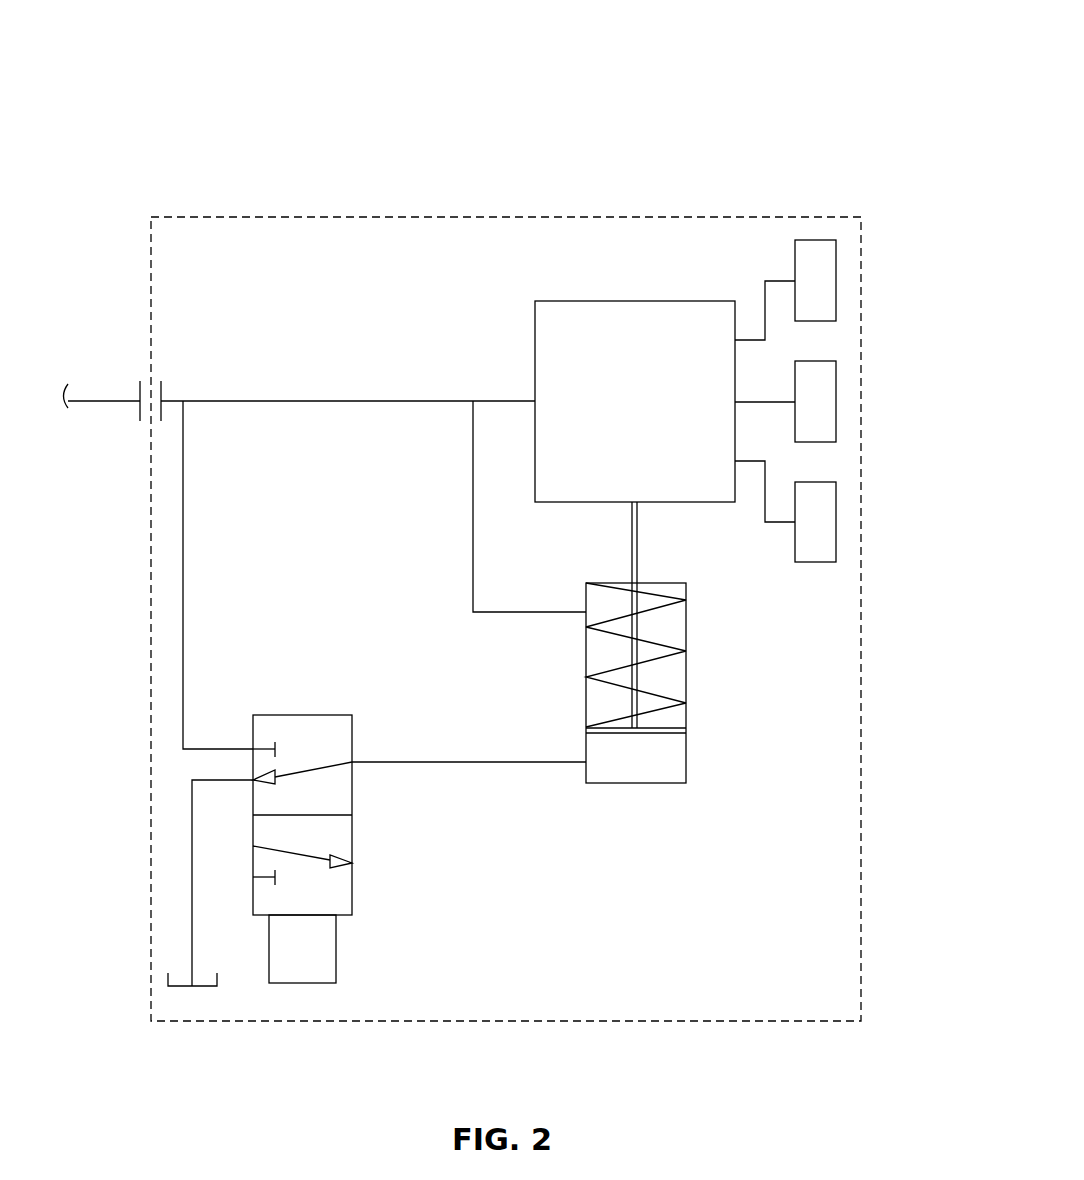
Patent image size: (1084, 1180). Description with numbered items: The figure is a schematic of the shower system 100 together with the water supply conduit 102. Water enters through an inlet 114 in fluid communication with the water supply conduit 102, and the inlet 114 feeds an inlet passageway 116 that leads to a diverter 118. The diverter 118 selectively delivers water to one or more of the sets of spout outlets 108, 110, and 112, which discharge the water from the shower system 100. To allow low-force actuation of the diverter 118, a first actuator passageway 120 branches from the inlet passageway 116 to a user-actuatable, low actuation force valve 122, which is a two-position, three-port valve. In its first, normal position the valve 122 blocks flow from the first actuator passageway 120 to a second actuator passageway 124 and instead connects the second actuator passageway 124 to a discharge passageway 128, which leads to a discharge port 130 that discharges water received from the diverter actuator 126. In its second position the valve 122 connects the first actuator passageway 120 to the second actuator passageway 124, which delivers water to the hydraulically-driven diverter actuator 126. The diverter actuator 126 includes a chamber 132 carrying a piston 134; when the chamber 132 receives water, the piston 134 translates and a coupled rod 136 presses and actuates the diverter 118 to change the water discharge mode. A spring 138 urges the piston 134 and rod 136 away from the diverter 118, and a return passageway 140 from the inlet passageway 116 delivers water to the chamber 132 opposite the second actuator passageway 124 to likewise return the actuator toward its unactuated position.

The shower system 100 is at (197, 138).
The water supply conduit 102 is at (101, 400).
The set of spout outlets 108 is at (836, 278).
The set of spout outlets 110 is at (836, 400).
The set of spout outlets 112 is at (836, 520).
The inlet 114 is at (172, 400).
The inlet passageway 116 is at (350, 400).
The diverter 118 is at (633, 301).
The first actuator passageway 120 is at (183, 578).
The valve 122 is at (300, 715).
The second actuator passageway 124 is at (467, 760).
The diverter actuator 126 is at (637, 783).
The discharge passageway 128 is at (192, 856).
The discharge port 130 is at (168, 984).
The chamber 132 is at (682, 763).
The piston 134 is at (686, 731).
The rod 136 is at (636, 677).
The spring 138 is at (657, 643).
The return passageway 140 is at (473, 508).